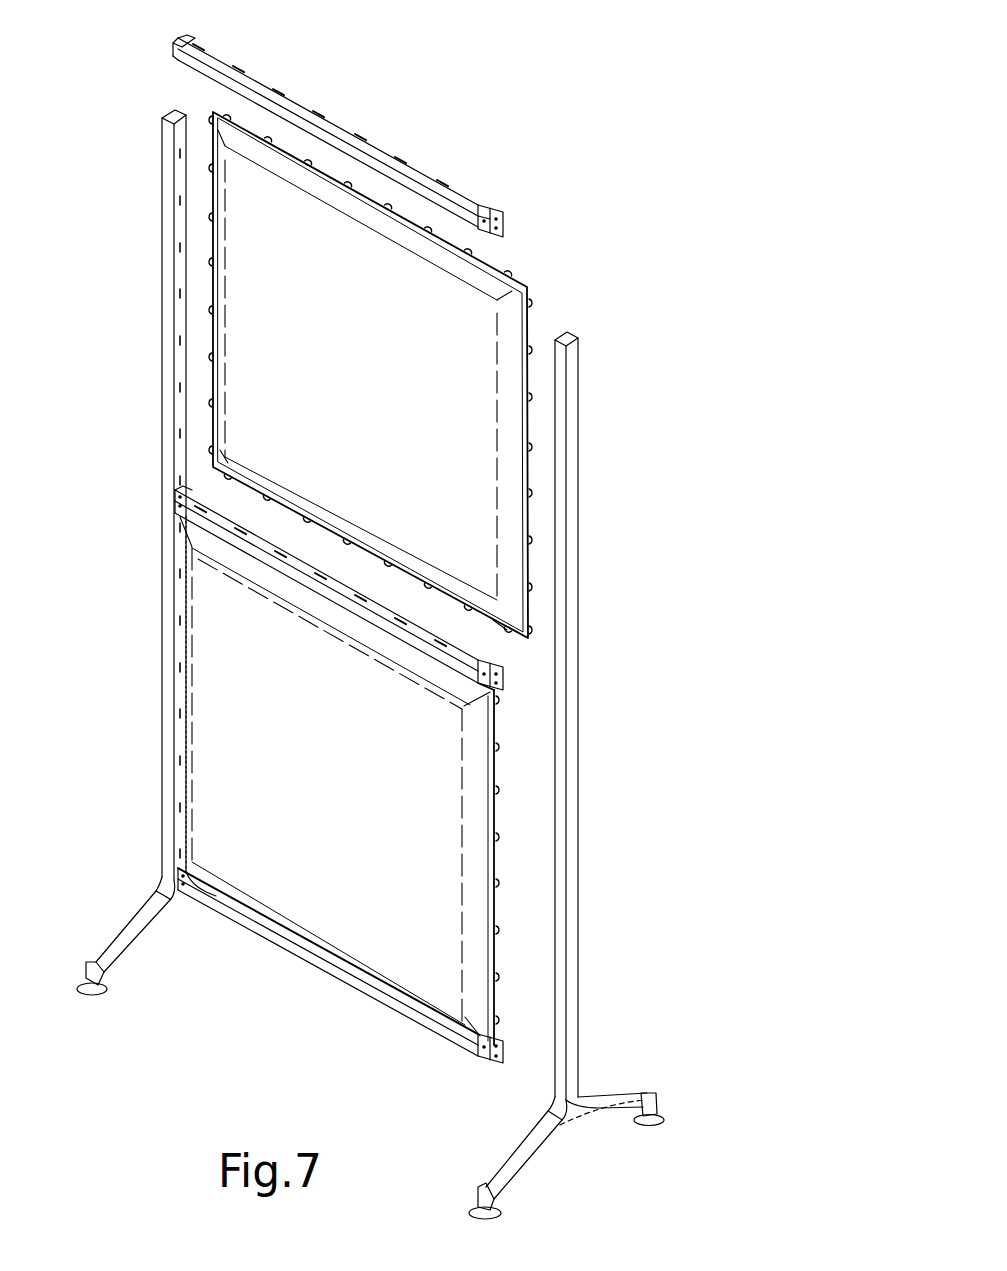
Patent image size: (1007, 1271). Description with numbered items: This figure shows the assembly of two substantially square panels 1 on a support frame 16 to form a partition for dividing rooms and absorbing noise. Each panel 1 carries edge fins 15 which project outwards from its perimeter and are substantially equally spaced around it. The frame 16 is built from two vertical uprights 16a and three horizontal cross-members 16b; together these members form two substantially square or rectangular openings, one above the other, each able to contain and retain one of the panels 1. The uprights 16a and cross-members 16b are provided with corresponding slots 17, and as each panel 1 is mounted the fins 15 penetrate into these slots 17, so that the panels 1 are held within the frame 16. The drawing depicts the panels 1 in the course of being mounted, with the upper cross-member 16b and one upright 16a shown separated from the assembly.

The panel 1 is at (372, 383).
The edge fins 15 is at (528, 300).
The support frame 16 is at (590, 142).
The vertical uprights 16a is at (162, 388).
The horizontal cross-members 16b is at (340, 128).
The slots 17 is at (236, 67).